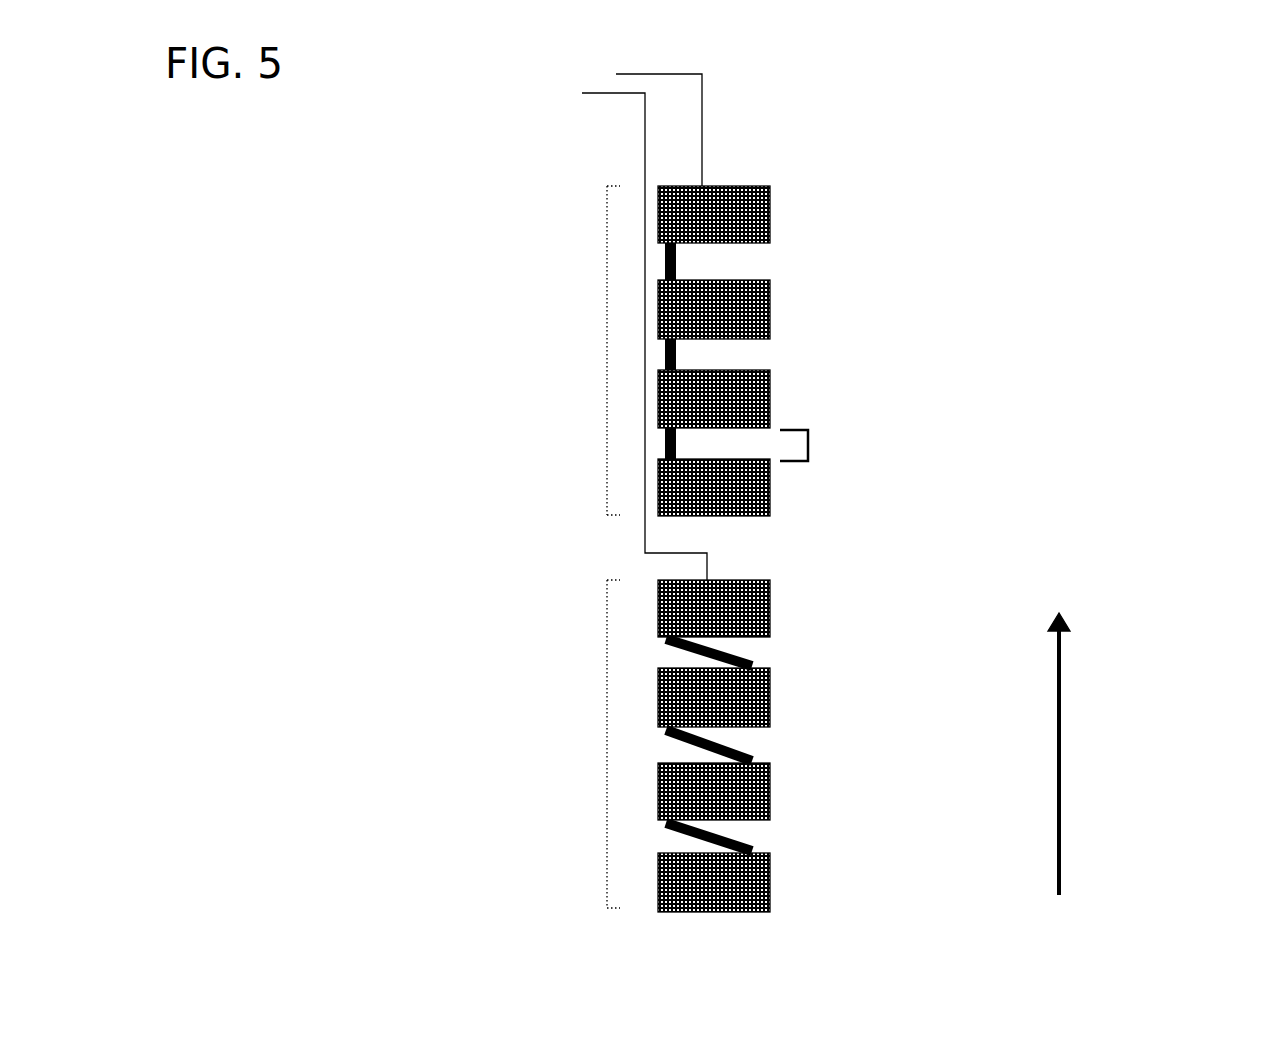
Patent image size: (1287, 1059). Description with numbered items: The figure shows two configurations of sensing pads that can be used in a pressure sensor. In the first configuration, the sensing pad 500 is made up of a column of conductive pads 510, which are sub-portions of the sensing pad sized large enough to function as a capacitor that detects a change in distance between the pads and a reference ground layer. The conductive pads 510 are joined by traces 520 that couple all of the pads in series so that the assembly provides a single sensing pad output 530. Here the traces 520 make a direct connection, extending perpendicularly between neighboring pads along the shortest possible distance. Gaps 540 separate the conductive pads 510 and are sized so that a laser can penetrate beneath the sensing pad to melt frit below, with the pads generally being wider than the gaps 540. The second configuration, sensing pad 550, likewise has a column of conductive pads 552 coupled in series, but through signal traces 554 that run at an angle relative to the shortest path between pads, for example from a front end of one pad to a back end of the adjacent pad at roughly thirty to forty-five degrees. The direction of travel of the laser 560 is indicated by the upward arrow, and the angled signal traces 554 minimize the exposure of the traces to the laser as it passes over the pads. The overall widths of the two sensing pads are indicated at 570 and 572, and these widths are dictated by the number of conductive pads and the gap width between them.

The sensing pad 500 is at (745, 327).
The conductive pads 510 is at (770, 220).
The traces 520 is at (665, 272).
The sensing pad output 530 is at (702, 104).
The gaps 540 is at (808, 445).
The sensing pad 550 is at (740, 746).
The conductive pads 552 is at (770, 602).
The signal traces 554 is at (730, 661).
The direction of travel of the laser 560 is at (1139, 754).
The width of the sensing pad 570 is at (607, 350).
The width of the sensing pad 572 is at (607, 744).